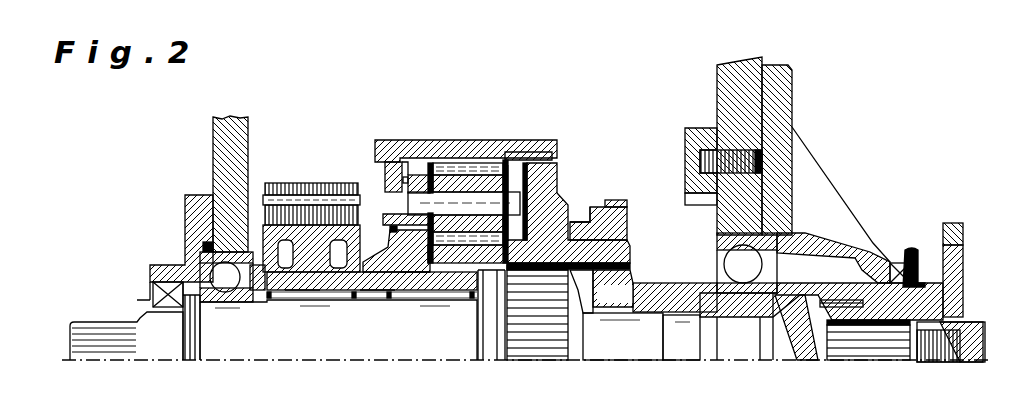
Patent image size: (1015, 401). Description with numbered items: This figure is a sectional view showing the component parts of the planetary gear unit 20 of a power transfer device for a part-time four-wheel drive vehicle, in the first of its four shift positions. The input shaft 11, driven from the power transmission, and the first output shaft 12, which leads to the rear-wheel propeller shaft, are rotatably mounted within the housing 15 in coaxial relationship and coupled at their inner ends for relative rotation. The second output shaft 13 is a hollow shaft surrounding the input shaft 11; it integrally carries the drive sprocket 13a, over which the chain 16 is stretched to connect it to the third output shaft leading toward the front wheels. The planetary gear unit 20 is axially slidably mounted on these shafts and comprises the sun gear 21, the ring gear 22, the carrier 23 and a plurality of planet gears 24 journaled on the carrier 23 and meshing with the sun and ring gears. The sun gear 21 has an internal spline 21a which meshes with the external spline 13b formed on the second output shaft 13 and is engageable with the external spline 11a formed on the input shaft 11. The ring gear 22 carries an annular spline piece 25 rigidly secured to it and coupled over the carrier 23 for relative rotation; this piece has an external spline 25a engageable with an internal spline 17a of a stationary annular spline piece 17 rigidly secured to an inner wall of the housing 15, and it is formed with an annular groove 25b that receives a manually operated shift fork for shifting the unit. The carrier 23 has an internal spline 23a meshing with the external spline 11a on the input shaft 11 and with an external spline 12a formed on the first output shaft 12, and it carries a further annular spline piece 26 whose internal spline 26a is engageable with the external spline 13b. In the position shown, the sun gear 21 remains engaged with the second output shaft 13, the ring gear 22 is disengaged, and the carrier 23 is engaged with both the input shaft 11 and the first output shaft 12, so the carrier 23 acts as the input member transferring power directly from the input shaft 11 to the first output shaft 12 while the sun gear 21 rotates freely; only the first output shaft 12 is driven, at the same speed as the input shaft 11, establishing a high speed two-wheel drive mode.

The input shaft 11 is at (297, 352).
The external spline 11a is at (543, 348).
The first output shaft 12 is at (680, 283).
The external spline 12a is at (630, 267).
The second output shaft 13 is at (395, 282).
The drive sprocket 13a is at (302, 290).
The external spline 13b is at (413, 284).
The housing 15 is at (249, 136).
The chain 16 is at (328, 183).
The stationary annular spline piece 17 is at (690, 128).
The internal spline 17a is at (700, 206).
The planetary gear unit 20 is at (490, 136).
The sun gear 21 is at (463, 264).
The internal spline 21a is at (490, 272).
The ring gear 22 is at (437, 139).
The carrier 23 is at (545, 170).
The internal spline 23a is at (578, 270).
The planet gears 24 is at (502, 163).
The annular spline piece 25 is at (572, 222).
The external spline 25a is at (615, 203).
The annular groove 25b is at (582, 218).
The annular spline piece 26 is at (380, 252).
The internal spline 26a is at (377, 284).